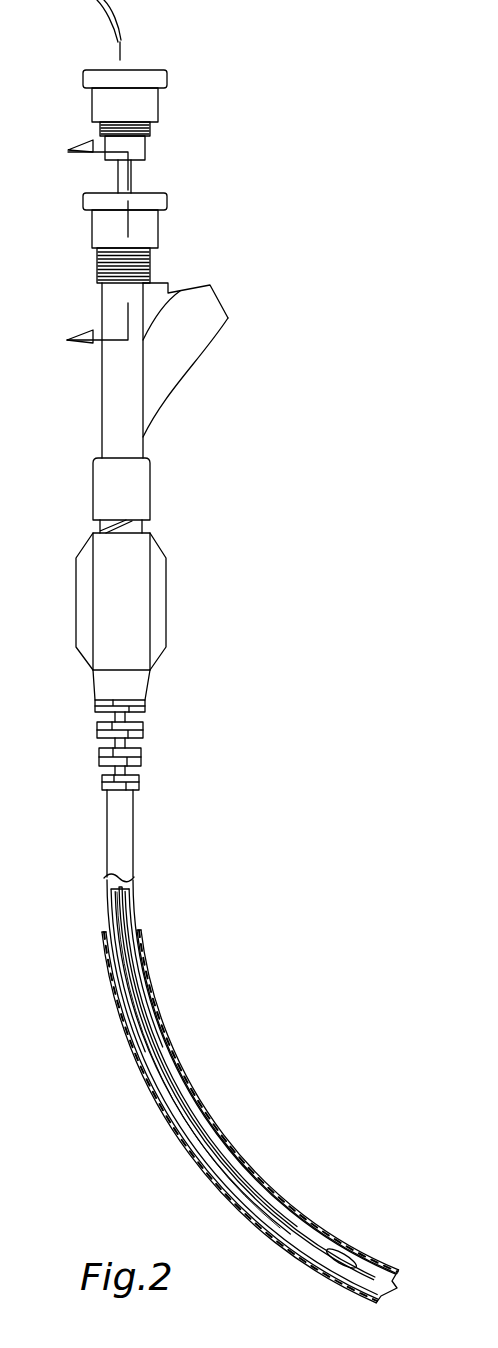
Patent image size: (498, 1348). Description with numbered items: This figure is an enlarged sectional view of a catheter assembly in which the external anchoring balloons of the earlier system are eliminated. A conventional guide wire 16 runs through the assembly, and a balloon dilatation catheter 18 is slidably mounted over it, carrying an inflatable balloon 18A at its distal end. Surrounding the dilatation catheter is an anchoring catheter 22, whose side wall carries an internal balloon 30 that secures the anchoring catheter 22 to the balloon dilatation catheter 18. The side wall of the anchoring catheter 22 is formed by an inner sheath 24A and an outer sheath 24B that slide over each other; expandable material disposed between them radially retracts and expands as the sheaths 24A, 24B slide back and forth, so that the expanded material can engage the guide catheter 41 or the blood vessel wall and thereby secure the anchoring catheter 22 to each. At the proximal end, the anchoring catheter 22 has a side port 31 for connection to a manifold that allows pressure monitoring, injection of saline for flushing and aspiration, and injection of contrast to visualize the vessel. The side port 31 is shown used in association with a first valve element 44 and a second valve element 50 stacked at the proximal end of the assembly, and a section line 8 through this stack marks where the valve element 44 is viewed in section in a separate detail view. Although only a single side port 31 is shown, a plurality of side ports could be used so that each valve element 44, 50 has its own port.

The section line for FIG. 8 is at (84, 245).
The guide wire 16 is at (121, 45).
The balloon dilatation catheter 18 is at (110, 15).
The inflatable balloon 18A is at (326, 1275).
The anchoring catheter 22 is at (133, 832).
The inner sheath 24A is at (136, 918).
The outer sheath 24B is at (133, 896).
The internal balloon 30 is at (232, 1170).
The side port 31 is at (190, 347).
The guide catheter 41 is at (105, 963).
The first valve element 44 is at (160, 108).
The second valve element 50 is at (160, 228).